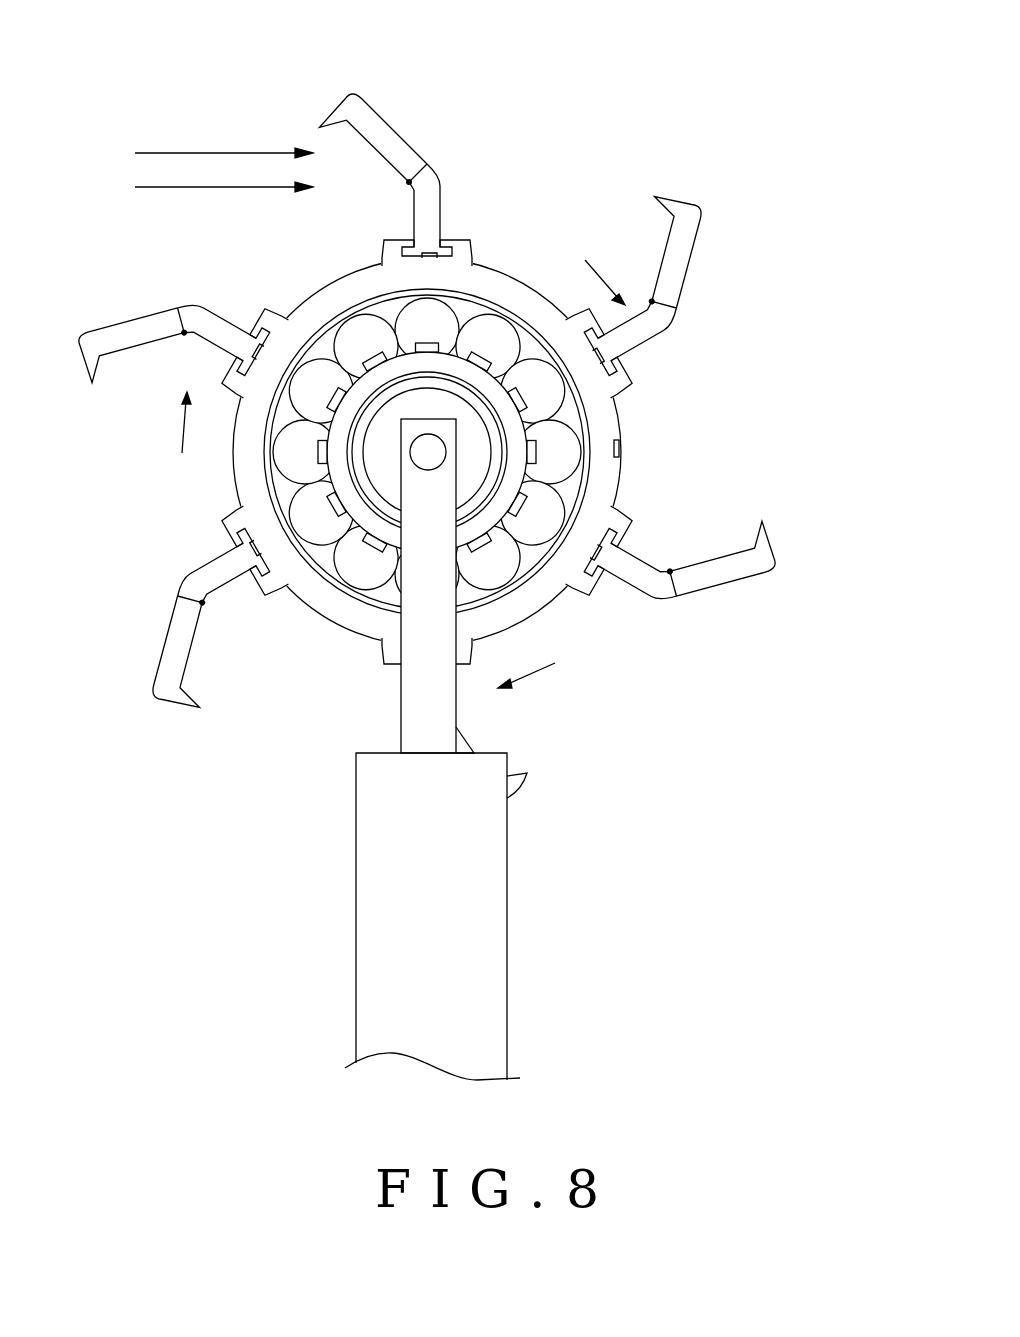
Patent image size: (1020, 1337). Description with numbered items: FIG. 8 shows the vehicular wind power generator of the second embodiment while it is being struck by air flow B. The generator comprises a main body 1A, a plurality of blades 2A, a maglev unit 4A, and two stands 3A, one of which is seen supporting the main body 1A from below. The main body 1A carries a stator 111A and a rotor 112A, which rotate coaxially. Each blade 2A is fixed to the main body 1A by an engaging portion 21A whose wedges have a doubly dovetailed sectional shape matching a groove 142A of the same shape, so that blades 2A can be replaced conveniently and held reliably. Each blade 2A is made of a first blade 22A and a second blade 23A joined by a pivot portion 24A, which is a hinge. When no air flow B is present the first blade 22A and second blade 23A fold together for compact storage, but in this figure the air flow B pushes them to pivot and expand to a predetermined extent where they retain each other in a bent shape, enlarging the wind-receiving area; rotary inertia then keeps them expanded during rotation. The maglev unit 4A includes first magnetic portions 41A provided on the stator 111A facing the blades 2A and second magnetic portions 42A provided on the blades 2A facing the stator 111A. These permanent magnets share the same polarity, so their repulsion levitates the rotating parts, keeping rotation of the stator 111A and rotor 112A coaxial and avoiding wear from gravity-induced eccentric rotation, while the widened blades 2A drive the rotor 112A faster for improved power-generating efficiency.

The main body 1A is at (494, 507).
The stator 111A is at (532, 550).
The rotor 112A is at (602, 422).
The groove 142A is at (452, 257).
The blade 2A is at (458, 125).
The engaging portion 21A is at (447, 227).
The first blade 22A is at (370, 125).
The second blade 23A is at (428, 200).
The pivot portion 24A is at (407, 183).
The stand 3A is at (482, 912).
The maglev unit 4A is at (578, 645).
The first magnetic portion 41A is at (480, 542).
The second magnetic portion 42A is at (593, 575).
The air flow B is at (214, 152).